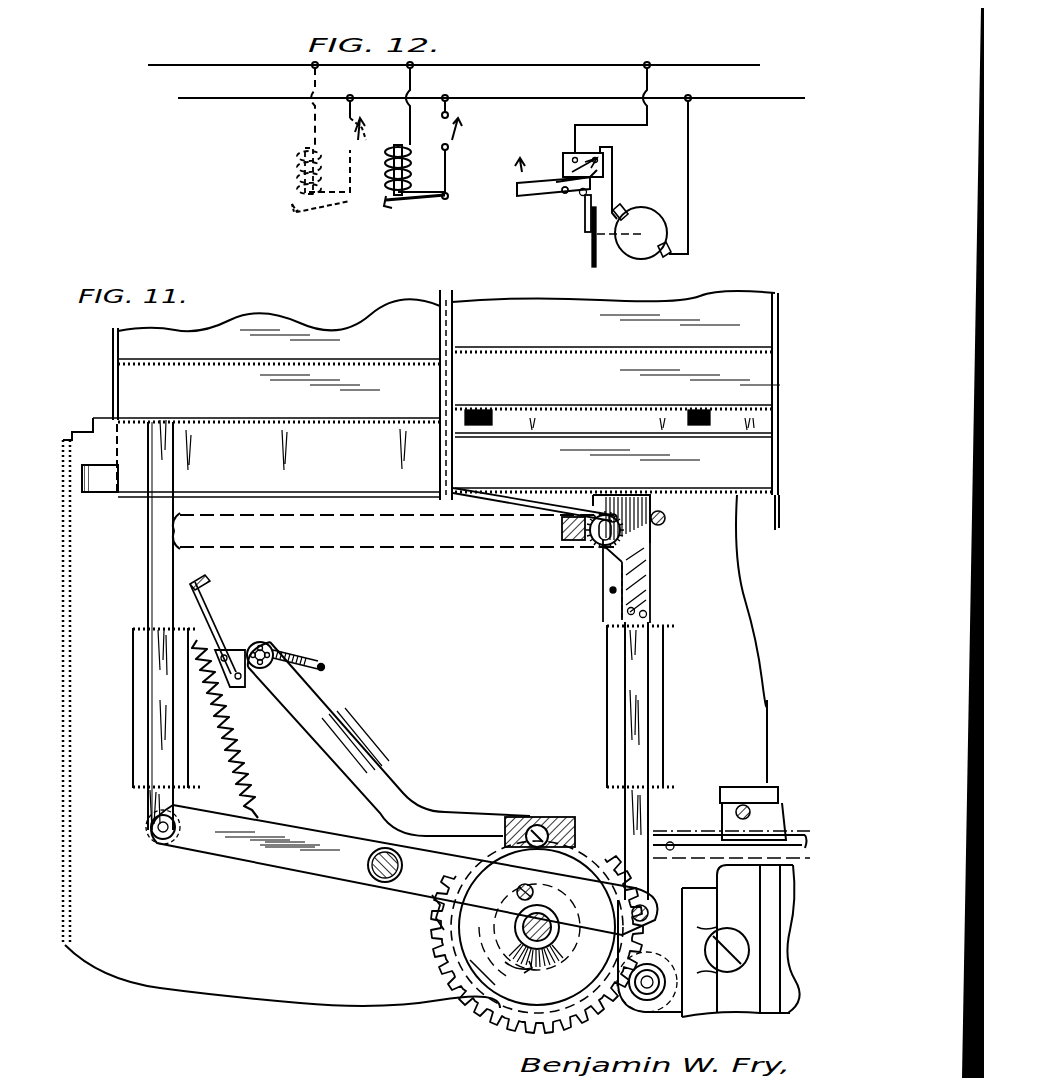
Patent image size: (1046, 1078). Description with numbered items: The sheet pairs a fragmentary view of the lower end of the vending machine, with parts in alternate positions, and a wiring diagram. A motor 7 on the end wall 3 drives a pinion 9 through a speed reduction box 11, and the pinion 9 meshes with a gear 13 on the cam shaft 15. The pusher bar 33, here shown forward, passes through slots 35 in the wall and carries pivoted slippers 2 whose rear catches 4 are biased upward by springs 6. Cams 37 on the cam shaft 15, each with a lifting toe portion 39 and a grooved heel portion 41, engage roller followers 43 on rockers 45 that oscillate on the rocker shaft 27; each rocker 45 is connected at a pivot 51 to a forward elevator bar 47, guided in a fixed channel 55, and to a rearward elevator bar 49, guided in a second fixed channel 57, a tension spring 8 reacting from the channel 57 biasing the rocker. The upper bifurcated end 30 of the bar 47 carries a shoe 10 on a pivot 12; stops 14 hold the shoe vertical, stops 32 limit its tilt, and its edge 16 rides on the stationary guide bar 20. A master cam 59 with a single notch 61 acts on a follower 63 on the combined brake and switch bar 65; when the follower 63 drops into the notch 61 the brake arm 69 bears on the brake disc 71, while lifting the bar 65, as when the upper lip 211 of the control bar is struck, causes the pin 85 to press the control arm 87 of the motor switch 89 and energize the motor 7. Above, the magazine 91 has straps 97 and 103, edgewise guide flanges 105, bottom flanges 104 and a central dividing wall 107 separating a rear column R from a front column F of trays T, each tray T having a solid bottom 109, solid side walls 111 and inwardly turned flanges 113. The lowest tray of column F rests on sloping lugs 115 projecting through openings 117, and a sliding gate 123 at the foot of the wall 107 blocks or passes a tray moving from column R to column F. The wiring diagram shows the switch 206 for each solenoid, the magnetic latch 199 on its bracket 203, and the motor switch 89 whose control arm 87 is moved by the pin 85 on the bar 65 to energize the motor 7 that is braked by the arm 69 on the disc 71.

In FIG. 12, the bracket 203 is at (297, 170).
In FIG. 12, the switch 206 is at (406, 146).
In FIG. 12, the gravity returned magnetic latch 199 is at (304, 207).
In FIG. 12, the motor switch 89 is at (575, 153).
In FIG. 11, the motor switch 89 is at (762, 800).
In FIG. 12, the control arm 87 is at (556, 182).
In FIG. 11, the control arm 87 is at (707, 836).
In FIG. 12, the combined brake and switch bar 65 is at (525, 198).
In FIG. 11, the combined brake and switch bar 65 is at (372, 754).
In FIG. 12, the pin 85 is at (560, 198).
In FIG. 11, the pin 85 is at (668, 852).
In FIG. 12, the brake arm 69 is at (585, 218).
In FIG. 12, the brake disc 71 is at (592, 243).
In FIG. 12, the motor 7 is at (647, 225).
In FIG. 11, the motor 7 is at (770, 915).
In FIG. 11, the end wall 3 is at (737, 640).
In FIG. 11, the magazine 91 is at (107, 365).
In FIG. 11, the tray T is at (140, 378).
In FIG. 11, the solid bottom 109 is at (318, 364).
In FIG. 11, the solid side walls 111 is at (206, 332).
In FIG. 11, the inwardly turned flange 113 is at (512, 296).
In FIG. 11, the central dividing wall 107 is at (444, 300).
In FIG. 11, the vertically sliding gate 123 is at (444, 455).
In FIG. 11, the rear column R is at (270, 338).
In FIG. 11, the front column F is at (563, 380).
In FIG. 11, the lugs 115 is at (492, 418).
In FIG. 11, the openings 117 is at (478, 410).
In FIG. 11, the edgewise guide flanges 105 is at (117, 440).
In FIG. 11, the strap 103 is at (78, 493).
In FIG. 11, the strap 97 is at (780, 515).
In FIG. 11, the bottom flanges 104 is at (255, 494).
In FIG. 11, the slipper 2 is at (520, 519).
In FIG. 11, the slot 35 is at (338, 548).
In FIG. 11, the rearward elevator bar 49 is at (148, 600).
In FIG. 11, the second fixed channel 57 is at (133, 785).
In FIG. 11, the upper lip 211 is at (210, 578).
In FIG. 11, the tension spring 8 is at (244, 750).
In FIG. 11, the follower 63 is at (533, 826).
In FIG. 11, the rocker 45 is at (295, 868).
In FIG. 11, the rocker shaft 27 is at (380, 882).
In FIG. 11, the grooved heel portion 41 is at (555, 915).
In FIG. 11, the cam 37 is at (490, 1012).
In FIG. 11, the lifting toe portion 39 is at (548, 1012).
In FIG. 11, the cam shaft 15 is at (556, 942).
In FIG. 11, the notch 61 is at (488, 980).
In FIG. 11, the gear 13 is at (440, 960).
In FIG. 11, the master cam 59 is at (436, 918).
In FIG. 11, the roller follower 43 is at (517, 893).
In FIG. 11, the pivot 51 is at (648, 920).
In FIG. 11, the pinion 9 is at (630, 1005).
In FIG. 11, the speed reduction box 11 is at (690, 1005).
In FIG. 11, the forward elevator bar 47 is at (628, 708).
In FIG. 11, the fixed channel 55 is at (607, 735).
In FIG. 11, the rear catch 4 is at (458, 489).
In FIG. 11, the shoe 10 is at (650, 520).
In FIG. 11, the stationary guide bar 20 is at (666, 518).
In FIG. 11, the edge 16 is at (655, 528).
In FIG. 11, the pusher bar 33 is at (565, 542).
In FIG. 11, the spring 6 is at (600, 550).
In FIG. 11, the upper bifurcated end 30 is at (650, 566).
In FIG. 11, the stop 32 is at (650, 585).
In FIG. 11, the pivot 12 is at (608, 592).
In FIG. 11, the stop 14 is at (610, 612).